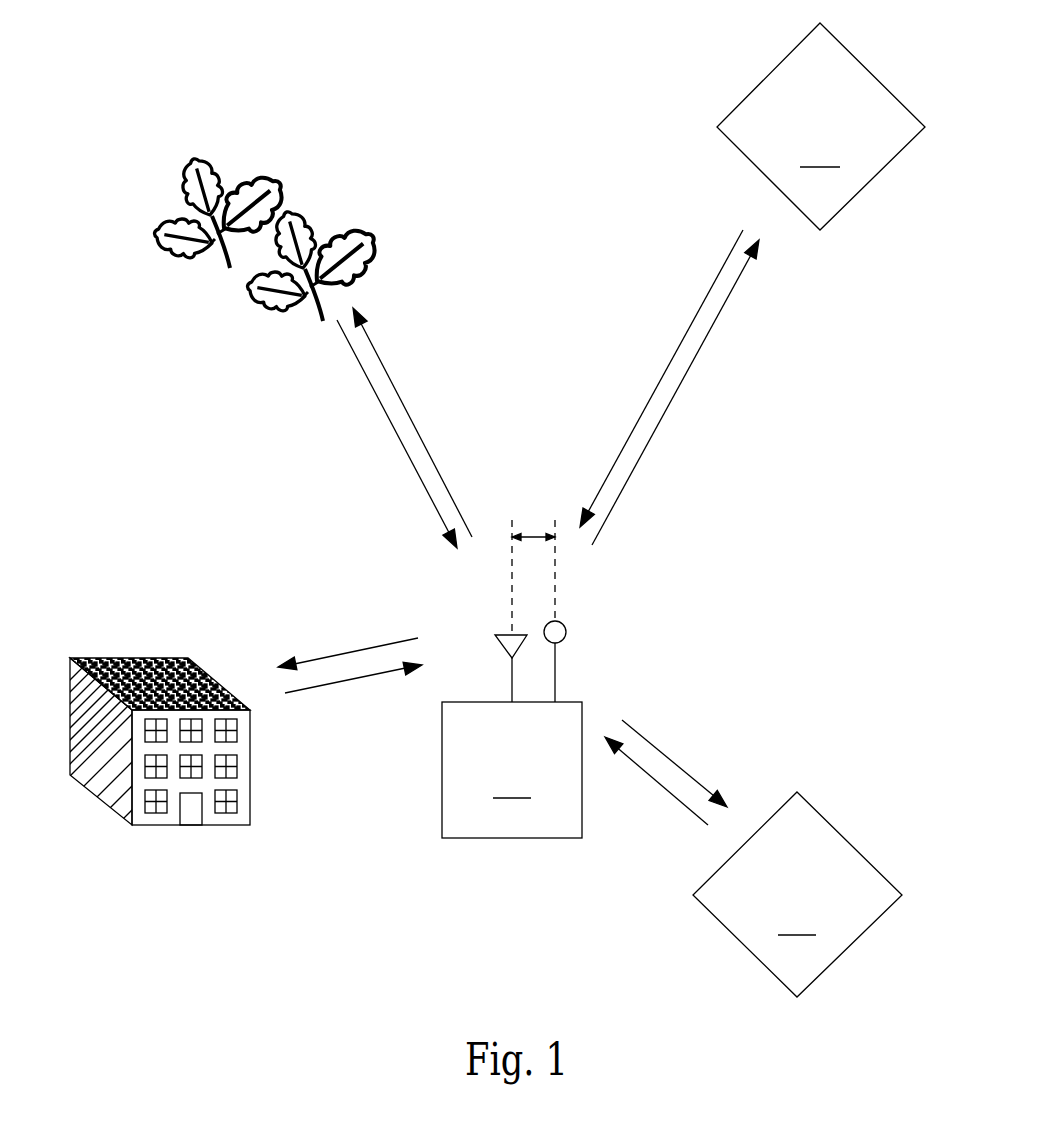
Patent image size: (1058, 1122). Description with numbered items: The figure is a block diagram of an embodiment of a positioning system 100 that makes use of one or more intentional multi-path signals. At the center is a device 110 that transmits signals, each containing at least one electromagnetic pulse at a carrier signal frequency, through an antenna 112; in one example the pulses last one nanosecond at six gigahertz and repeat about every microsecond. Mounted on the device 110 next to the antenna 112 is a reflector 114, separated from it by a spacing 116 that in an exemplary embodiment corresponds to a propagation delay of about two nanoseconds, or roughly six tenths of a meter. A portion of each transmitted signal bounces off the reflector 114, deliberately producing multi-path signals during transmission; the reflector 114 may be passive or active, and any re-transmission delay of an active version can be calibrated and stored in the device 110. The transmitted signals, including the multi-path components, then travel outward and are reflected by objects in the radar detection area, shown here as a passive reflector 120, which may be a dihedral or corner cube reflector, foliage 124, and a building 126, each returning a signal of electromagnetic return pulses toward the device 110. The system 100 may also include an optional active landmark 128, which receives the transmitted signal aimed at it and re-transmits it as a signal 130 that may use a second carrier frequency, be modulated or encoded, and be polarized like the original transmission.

The positioning system 100 is at (515, 83).
The device 110 is at (512, 770).
The antenna 112 is at (500, 645).
The reflector 114 is at (567, 630).
The spacing 116 is at (533, 532).
The passive reflector 120 is at (821, 126).
The foliage 124 is at (298, 213).
The building 126 is at (112, 658).
The active landmark 128 is at (797, 894).
The re-transmitted signal 130 is at (663, 790).